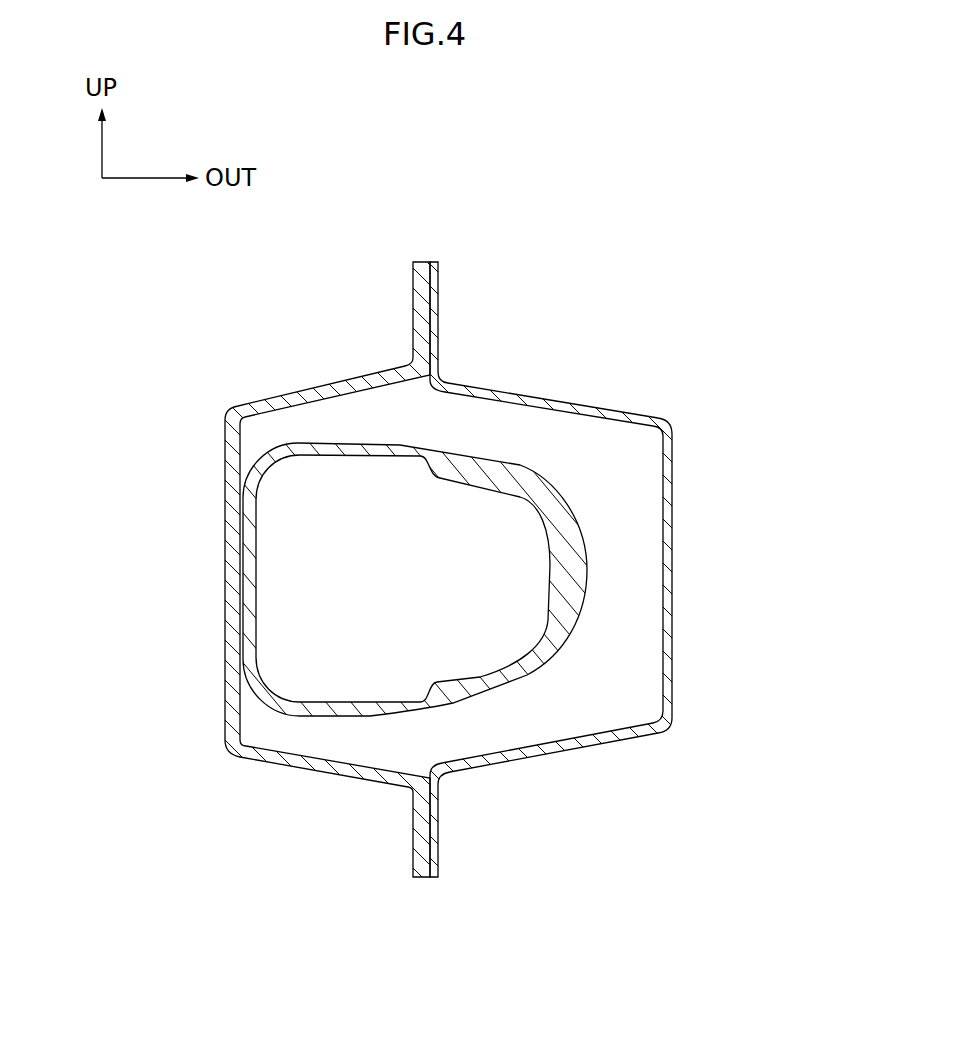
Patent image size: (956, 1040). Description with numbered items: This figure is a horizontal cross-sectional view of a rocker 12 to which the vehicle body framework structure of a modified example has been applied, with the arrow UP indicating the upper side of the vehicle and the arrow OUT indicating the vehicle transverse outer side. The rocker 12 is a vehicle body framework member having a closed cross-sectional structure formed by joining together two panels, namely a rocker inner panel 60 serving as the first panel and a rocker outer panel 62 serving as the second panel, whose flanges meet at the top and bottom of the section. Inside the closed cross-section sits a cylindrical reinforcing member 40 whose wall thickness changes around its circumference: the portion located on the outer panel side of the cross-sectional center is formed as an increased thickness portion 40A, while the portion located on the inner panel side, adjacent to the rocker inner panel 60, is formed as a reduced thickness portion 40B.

The rocker 12 is at (478, 570).
The cylindrical reinforcing member 40 is at (411, 574).
The increased thickness portion 40A is at (550, 580).
The reduced thickness portion 40B is at (258, 567).
The rocker inner panel 60 is at (225, 556).
The rocker outer panel 62 is at (672, 573).